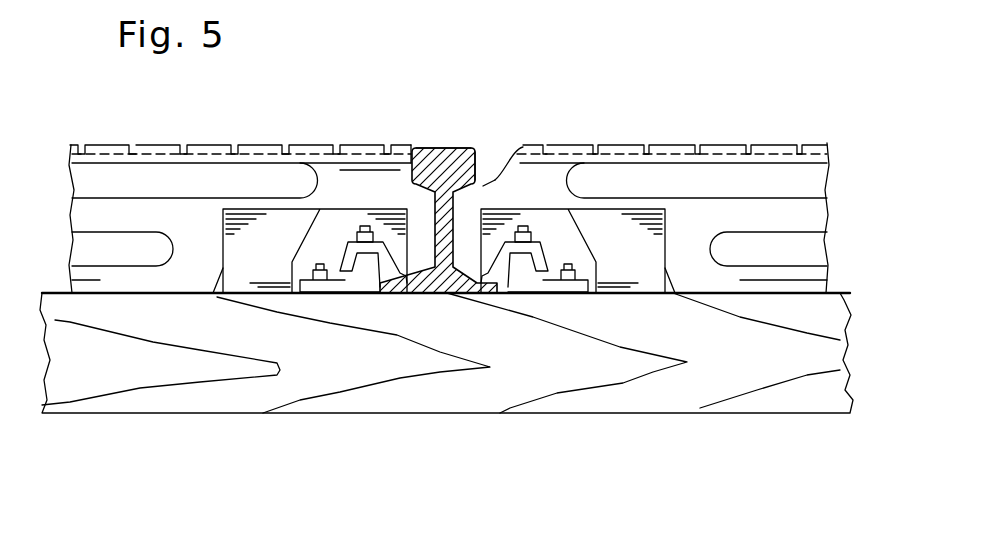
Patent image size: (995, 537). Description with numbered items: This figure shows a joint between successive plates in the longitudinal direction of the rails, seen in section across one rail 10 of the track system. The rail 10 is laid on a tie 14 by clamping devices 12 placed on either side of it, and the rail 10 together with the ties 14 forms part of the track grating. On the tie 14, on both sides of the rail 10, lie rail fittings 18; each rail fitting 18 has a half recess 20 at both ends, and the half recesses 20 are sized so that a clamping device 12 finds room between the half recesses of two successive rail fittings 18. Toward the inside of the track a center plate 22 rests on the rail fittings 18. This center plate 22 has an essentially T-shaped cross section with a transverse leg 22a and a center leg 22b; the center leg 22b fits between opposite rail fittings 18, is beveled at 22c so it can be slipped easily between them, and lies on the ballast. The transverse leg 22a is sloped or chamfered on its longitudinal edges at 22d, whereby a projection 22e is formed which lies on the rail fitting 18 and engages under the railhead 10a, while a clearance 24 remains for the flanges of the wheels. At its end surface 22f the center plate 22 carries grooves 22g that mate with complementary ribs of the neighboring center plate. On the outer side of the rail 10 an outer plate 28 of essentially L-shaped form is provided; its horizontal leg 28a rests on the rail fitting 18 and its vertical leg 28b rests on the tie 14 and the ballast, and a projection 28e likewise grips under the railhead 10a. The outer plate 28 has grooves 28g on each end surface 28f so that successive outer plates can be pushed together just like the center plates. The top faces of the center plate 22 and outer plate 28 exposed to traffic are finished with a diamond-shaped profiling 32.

The rail 10 is at (442, 270).
The railhead 10a is at (433, 147).
The clamping device 12 is at (363, 275).
The tie 14 is at (560, 380).
The rail fitting 18 is at (257, 230).
The half recess 20 is at (328, 223).
The center plate 22 is at (679, 145).
The transverse leg 22a is at (573, 153).
The center leg 22b is at (820, 276).
The bevel 22c is at (688, 297).
The chamfer 22d is at (507, 160).
The projection 22e is at (481, 175).
The end surface 22f is at (803, 212).
The groove 22g is at (747, 183).
The clearance 24 is at (487, 185).
The outer plate 28 is at (122, 145).
The horizontal leg 28a is at (367, 177).
The vertical leg 28b is at (83, 278).
The projection 28e is at (420, 202).
The end surface 28f is at (176, 145).
The groove 28g is at (103, 250).
The diamond-shaped profiling 32 is at (800, 143).